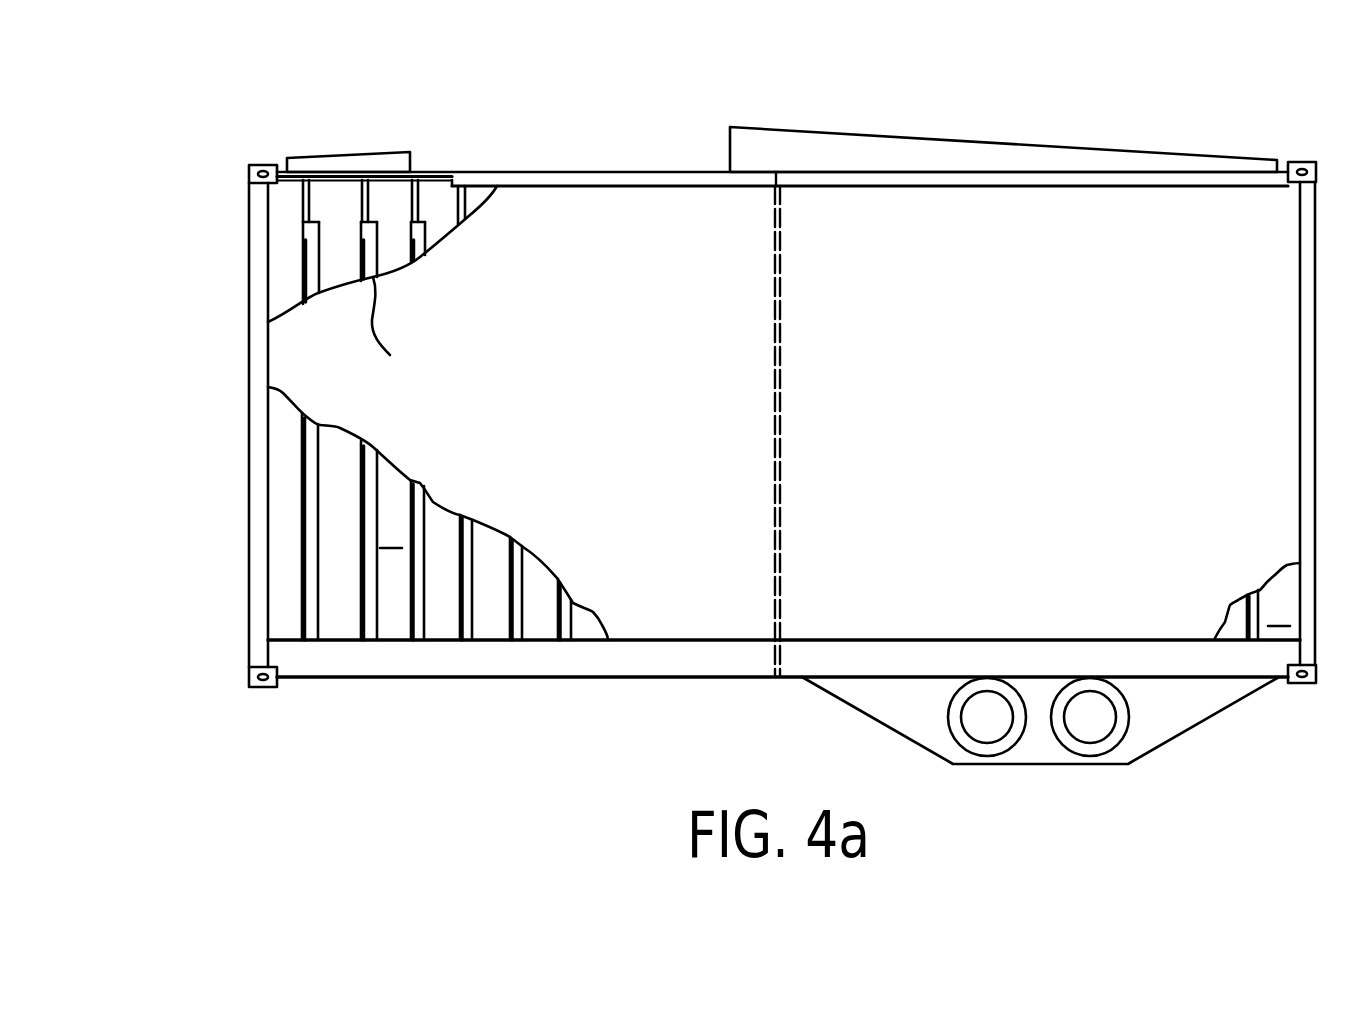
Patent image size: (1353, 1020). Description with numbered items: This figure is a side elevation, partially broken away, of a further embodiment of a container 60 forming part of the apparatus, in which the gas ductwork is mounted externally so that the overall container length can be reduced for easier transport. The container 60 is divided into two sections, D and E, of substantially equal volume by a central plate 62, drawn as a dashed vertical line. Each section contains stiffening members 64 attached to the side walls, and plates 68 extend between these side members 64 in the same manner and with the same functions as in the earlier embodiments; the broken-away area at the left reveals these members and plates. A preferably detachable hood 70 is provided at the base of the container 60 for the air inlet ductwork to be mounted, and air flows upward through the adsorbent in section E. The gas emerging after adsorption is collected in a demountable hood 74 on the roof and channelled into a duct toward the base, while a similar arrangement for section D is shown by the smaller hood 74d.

The container 60 is at (232, 358).
The central plate 62 is at (780, 488).
The stiffening members 64 is at (318, 425).
The plates 68 is at (302, 542).
The hood 70 is at (1208, 722).
The demountable hood 74 is at (982, 142).
The demountable hood for section D 74d is at (355, 153).